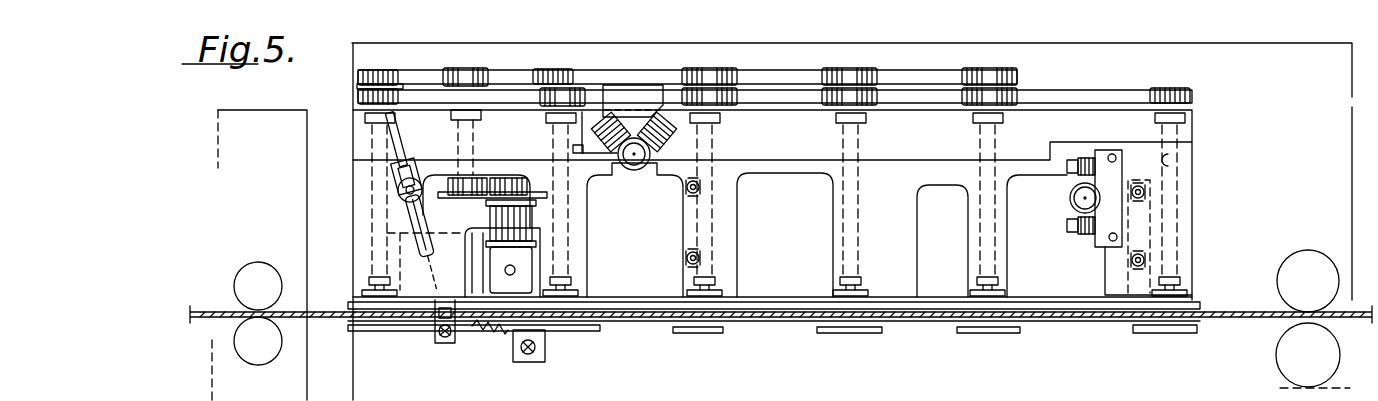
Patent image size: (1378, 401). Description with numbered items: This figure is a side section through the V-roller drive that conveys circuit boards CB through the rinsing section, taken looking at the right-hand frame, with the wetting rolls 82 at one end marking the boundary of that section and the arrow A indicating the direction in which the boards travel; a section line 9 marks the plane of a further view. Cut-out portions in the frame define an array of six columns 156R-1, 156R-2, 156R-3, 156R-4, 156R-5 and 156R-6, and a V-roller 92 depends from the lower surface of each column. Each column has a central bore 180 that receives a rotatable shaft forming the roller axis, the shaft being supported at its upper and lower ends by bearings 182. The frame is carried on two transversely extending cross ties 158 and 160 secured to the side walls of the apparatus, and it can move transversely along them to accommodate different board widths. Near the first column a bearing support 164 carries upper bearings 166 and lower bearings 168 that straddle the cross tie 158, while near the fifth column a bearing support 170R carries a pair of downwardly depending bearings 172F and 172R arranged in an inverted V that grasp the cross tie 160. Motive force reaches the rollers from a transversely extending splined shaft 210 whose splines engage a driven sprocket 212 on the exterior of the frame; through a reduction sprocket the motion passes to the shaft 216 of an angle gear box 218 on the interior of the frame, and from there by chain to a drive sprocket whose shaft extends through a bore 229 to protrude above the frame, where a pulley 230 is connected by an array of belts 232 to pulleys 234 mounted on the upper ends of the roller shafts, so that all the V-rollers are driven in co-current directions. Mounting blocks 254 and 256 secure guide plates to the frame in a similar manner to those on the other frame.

The wetting rolls 82 is at (258, 287).
The V-rollers 92 is at (702, 330).
The first column of the right frame 156R-1 is at (1178, 220).
The second column of the right frame 156R-2 is at (1000, 270).
The third column of the right frame 156R-3 is at (905, 258).
The fourth column of the right frame 156R-4 is at (732, 258).
The fifth column of the right frame 156R-5 is at (583, 250).
The sixth column of the right frame 156R-6 is at (362, 233).
The cross tie 158 is at (1070, 198).
The cross tie 160 is at (637, 172).
The bearing support 164 is at (1140, 139).
The upper bearings 166 is at (1083, 158).
The lower bearings 168 is at (1082, 236).
The bearing support 170R is at (628, 100).
The rear bearing 172R is at (597, 127).
The front bearing 172F is at (673, 125).
The central bore 180 is at (1168, 160).
The bearings 182 is at (1160, 262).
The splined shaft 210 is at (546, 347).
The driven sprocket 212 is at (450, 344).
The shaft of the angle gear box 216 is at (513, 268).
The angle gear box 218 is at (528, 262).
The bore 229 is at (458, 150).
The pulley 230 is at (485, 70).
The belts 232 is at (440, 66).
The pulleys 234 is at (357, 102).
The mounting block 254 is at (1142, 246).
The mounting block 256 is at (695, 228).
The circuit boards CB is at (1255, 294).
The direction of travel arrow A is at (873, 353).
The section line 9— 9 is at (415, 378).